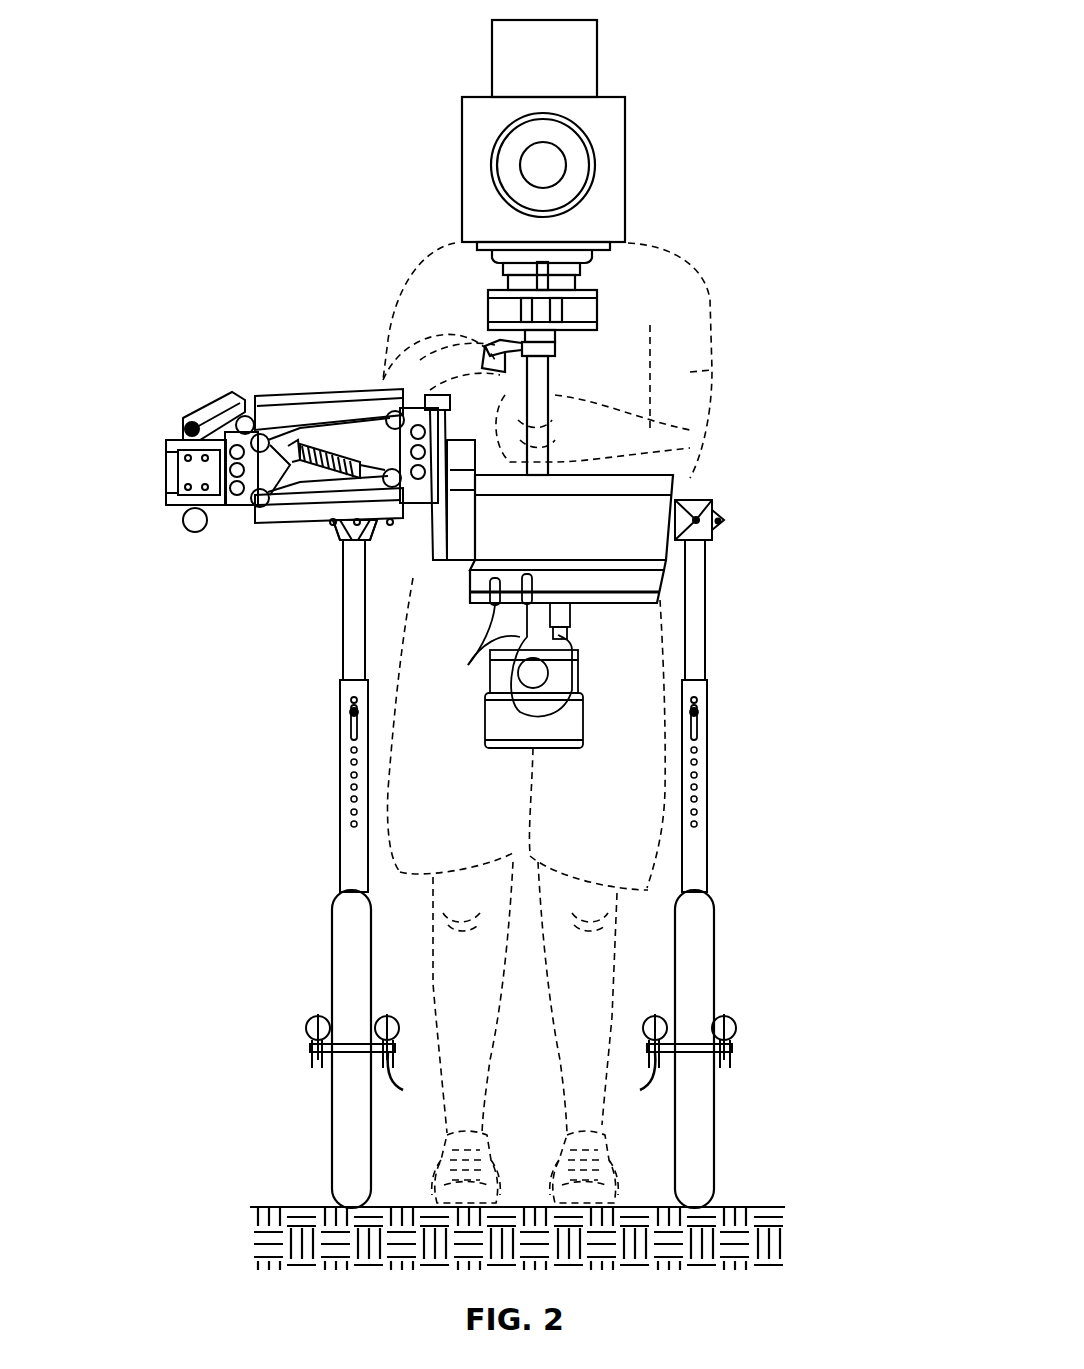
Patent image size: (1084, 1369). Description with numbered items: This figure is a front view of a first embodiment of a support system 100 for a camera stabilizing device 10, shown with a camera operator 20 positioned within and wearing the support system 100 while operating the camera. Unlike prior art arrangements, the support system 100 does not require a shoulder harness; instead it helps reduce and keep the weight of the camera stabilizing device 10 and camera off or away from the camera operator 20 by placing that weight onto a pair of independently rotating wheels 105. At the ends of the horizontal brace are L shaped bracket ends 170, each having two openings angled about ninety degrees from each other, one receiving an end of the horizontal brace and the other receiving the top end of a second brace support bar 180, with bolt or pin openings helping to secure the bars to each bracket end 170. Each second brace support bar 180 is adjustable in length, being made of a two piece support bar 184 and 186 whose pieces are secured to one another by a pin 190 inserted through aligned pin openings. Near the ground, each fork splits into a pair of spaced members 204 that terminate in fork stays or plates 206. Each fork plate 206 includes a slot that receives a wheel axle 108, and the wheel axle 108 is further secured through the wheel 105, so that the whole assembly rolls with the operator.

The camera stabilizing device 10 is at (335, 383).
The camera operator 20 is at (697, 312).
The support system 100 is at (728, 489).
The L shaped bracket end 170 is at (724, 520).
The second brace support bar 180 is at (500, 716).
The two piece support bar 184 is at (352, 620).
The two piece support bar 186 is at (355, 812).
The pin 190 is at (352, 716).
The independently rotating wheel 105 is at (333, 955).
The spaced member 204 is at (308, 1025).
The wheel axle 108 is at (312, 1048).
The fork stay or plate 206 is at (523, 1089).